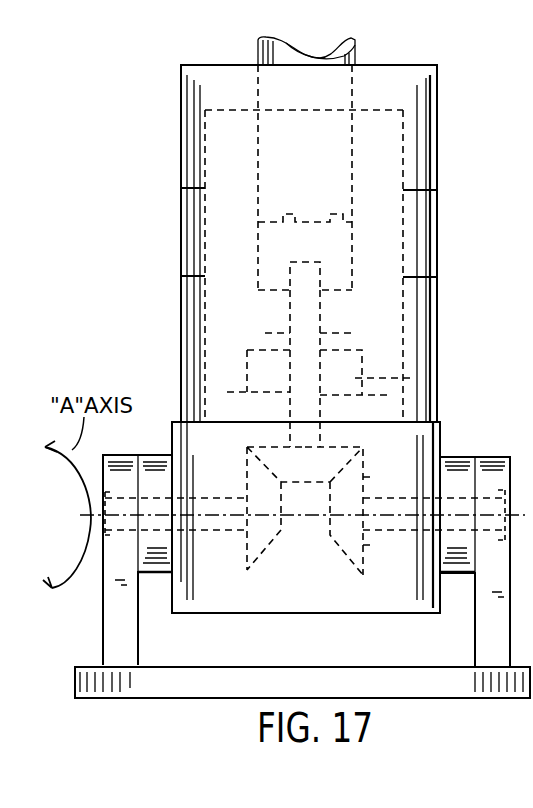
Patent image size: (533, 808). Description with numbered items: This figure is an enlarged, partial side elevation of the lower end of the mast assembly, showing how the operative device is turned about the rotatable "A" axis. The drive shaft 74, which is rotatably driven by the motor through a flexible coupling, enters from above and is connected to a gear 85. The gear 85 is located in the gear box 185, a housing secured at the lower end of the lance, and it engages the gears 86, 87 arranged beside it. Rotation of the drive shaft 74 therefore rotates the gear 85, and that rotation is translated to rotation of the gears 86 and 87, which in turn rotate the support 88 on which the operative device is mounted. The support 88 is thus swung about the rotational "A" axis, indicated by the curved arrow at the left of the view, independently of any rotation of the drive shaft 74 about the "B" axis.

The drive shaft 74 is at (352, 60).
The gear box 185 is at (428, 165).
The gear 85 is at (437, 368).
The gear 86 is at (363, 452).
The gear 87 is at (247, 452).
The support 88 is at (427, 690).